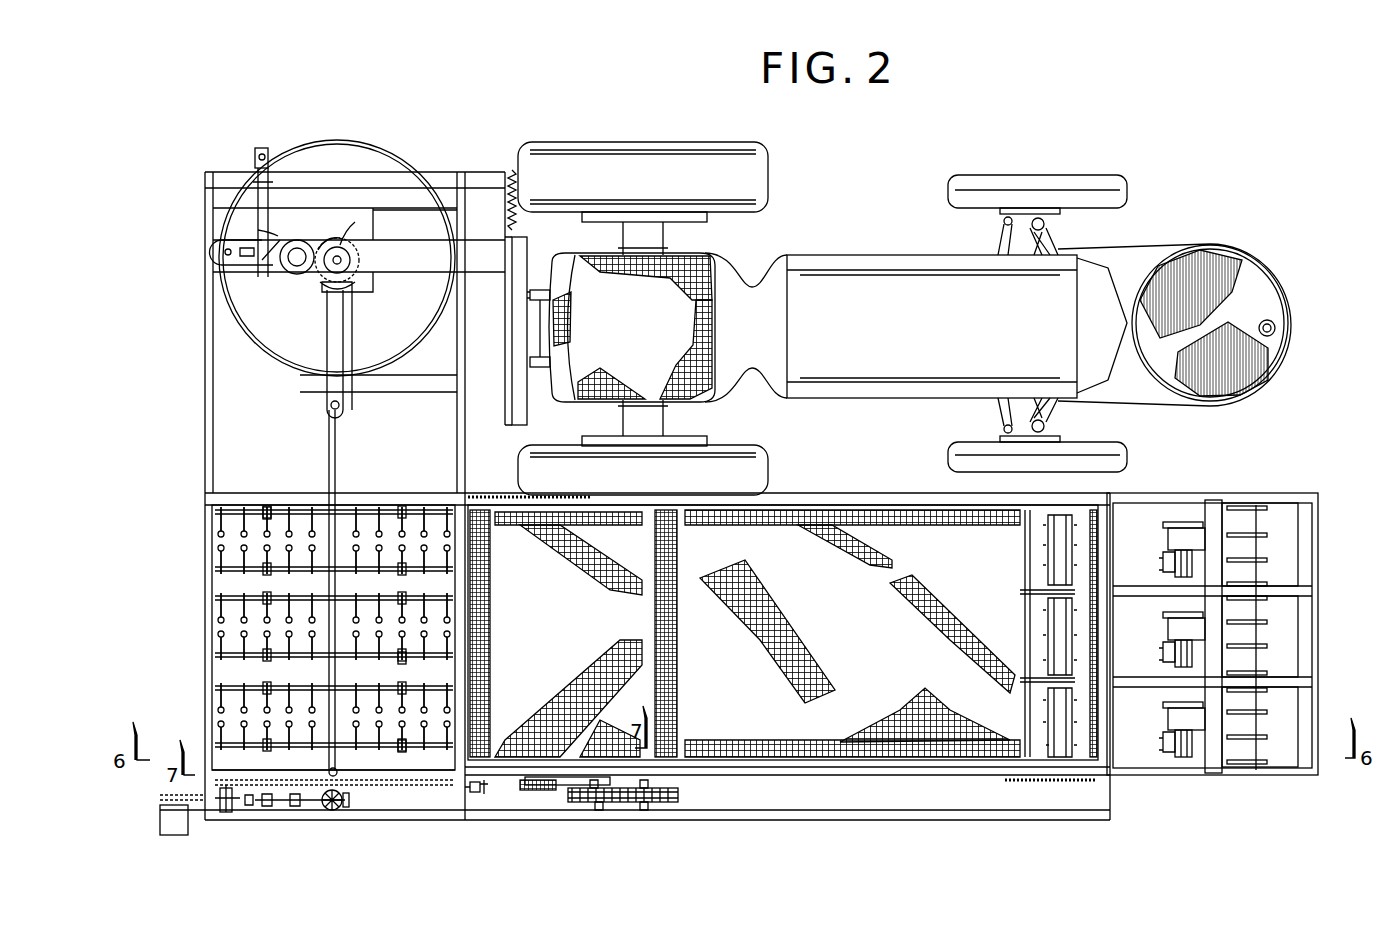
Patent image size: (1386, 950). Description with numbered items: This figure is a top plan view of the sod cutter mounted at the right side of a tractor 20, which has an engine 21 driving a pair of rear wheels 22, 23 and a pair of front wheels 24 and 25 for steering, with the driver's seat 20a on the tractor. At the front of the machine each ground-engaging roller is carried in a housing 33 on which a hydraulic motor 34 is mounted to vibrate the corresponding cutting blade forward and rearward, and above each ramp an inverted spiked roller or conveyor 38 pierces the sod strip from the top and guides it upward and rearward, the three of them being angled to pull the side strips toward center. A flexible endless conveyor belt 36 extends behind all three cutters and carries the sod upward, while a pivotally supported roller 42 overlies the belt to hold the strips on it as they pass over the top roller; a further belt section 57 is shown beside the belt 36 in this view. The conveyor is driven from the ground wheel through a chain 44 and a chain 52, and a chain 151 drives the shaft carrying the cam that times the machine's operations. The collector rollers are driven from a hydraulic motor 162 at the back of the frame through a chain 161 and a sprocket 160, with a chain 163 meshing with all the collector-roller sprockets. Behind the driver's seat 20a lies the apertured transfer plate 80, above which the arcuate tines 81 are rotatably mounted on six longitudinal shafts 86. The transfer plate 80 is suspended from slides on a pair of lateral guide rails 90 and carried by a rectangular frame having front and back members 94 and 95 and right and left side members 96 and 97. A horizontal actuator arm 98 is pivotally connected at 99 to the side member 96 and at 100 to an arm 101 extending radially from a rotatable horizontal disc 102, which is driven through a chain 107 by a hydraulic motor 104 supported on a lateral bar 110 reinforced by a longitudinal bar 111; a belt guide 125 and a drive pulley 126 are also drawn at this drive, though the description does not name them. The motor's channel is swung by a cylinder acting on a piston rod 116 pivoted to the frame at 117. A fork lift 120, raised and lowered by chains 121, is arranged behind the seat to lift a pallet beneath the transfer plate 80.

The tractor 20 is at (816, 235).
The driver's seat 20a is at (632, 327).
The engine 21 is at (891, 258).
The rear wheel 22 is at (665, 146).
The right rear wheel 23 is at (726, 447).
The front wheel 24 is at (1082, 175).
The front wheel 25 is at (1110, 456).
The housing 33 is at (1290, 554).
The hydraulic motor 34 is at (1165, 542).
The conveyor belt 36 is at (783, 632).
The inverted roller or conveyor 38 is at (1048, 540).
The pivotally supported roller 42 is at (677, 636).
The chain 44 is at (607, 803).
The chain 52 is at (568, 787).
The mesh belt 57 is at (490, 637).
The transfer plate 80 is at (306, 637).
The arcuate tines 81 is at (305, 568).
The rotatable shaft 86 is at (394, 506).
The guide rail 90 is at (205, 375).
The front member 94 is at (455, 672).
The back member 95 is at (205, 545).
The right side member 96 is at (394, 757).
The left side member 97 is at (255, 493).
The actuator arm 98 is at (338, 468).
The pivotal connection 99 is at (328, 769).
The pivotal connection 100 is at (339, 406).
The arm 101 is at (343, 347).
The rotatable horizontal disc 102 is at (318, 292).
The hydraulic motor 104 is at (291, 273).
The chain 107 is at (343, 238).
The horizontal bar 110 is at (362, 236).
The longitudinal bar 111 is at (359, 298).
The piston rod 116 is at (258, 170).
The pivotal connection 117 is at (265, 148).
The fork lift 120 is at (484, 386).
The chain 121 is at (534, 290).
The belt guide 125 is at (337, 248).
The drive pulley 126 is at (352, 263).
The chain 151 is at (535, 792).
The sprocket 160 is at (235, 796).
The chain 161 is at (224, 812).
The hydraulic motor 162 is at (160, 827).
The chain 163 is at (428, 790).